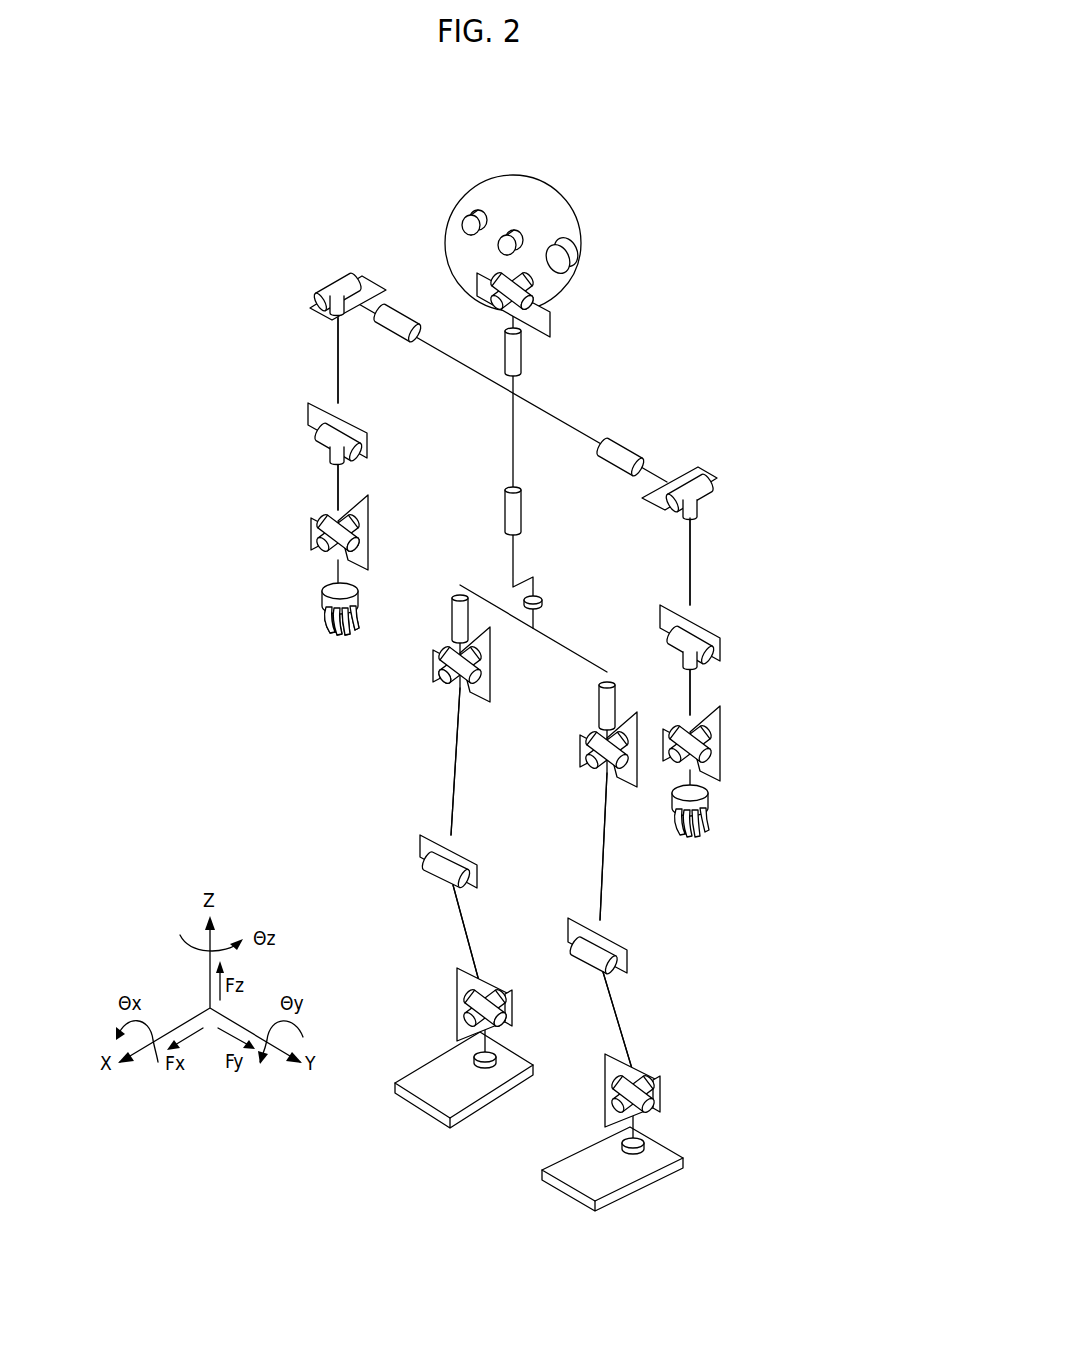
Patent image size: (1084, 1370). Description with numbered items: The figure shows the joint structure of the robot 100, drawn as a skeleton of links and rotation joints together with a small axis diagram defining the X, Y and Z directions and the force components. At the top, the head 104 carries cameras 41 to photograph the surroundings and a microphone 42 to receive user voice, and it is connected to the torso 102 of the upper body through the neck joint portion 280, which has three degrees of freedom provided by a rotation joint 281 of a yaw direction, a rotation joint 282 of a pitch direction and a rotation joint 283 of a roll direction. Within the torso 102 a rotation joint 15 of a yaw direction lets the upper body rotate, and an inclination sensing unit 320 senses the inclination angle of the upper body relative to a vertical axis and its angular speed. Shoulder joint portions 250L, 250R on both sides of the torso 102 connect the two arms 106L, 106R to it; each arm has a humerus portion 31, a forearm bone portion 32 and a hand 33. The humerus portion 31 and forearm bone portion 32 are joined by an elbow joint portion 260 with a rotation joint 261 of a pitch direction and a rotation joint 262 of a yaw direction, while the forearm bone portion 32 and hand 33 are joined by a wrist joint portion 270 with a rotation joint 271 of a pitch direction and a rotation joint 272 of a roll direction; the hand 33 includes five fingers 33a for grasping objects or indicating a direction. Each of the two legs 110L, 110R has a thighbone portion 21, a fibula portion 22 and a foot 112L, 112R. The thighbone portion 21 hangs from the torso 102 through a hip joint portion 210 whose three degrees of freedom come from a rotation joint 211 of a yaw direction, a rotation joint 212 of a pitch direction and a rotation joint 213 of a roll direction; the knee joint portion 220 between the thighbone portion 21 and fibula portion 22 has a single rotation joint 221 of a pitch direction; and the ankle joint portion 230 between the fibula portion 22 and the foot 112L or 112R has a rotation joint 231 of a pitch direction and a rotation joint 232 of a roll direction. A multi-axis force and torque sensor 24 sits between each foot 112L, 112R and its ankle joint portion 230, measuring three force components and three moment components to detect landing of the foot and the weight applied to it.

The robot 100 is at (805, 189).
The torso 102 is at (511, 466).
The head 104 is at (588, 189).
The right arm 106R is at (223, 421).
The left arm 106L is at (785, 616).
The right leg 110R is at (346, 805).
The left leg 110L is at (673, 893).
The right foot 112R is at (428, 1108).
The left foot 112L is at (566, 1192).
The cameras 41 is at (505, 245).
The microphone 42 is at (566, 262).
The rotation joint of a yaw direction 15 is at (521, 512).
The inclination sensing unit 320 is at (542, 602).
The neck joint portion 280 is at (578, 333).
The rotation joint of a yaw direction 281 is at (518, 355).
The rotation joint of a pitch direction 282 is at (532, 302).
The rotation joint of a roll direction 283 is at (494, 302).
The right shoulder joint portion 250R is at (331, 254).
The left shoulder joint portion 250L is at (665, 415).
The humerus portion 31 is at (337, 355).
The elbow joint portion 260 is at (286, 401).
The rotation joint of a pitch direction 261 is at (343, 437).
The rotation joint of a yaw direction 262 is at (345, 458).
The forearm bone portion 32 is at (337, 478).
The wrist joint portion 270 is at (288, 569).
The rotation joint of a pitch direction 271 is at (358, 546).
The rotation joint of a roll direction 272 is at (356, 526).
The hand 33 is at (305, 619).
The fingers 33a is at (340, 640).
The hip joint portion 210 is at (407, 681).
The rotation joint of a yaw direction 211 is at (453, 614).
The rotation joint of a pitch direction 212 is at (484, 671).
The rotation joint of a roll direction 213 is at (444, 684).
The thighbone portion 21 is at (456, 780).
The knee joint portion 220 is at (402, 887).
The rotation joint of a pitch direction 221 is at (455, 862).
The fibula portion 22 is at (466, 938).
The ankle joint portion 230 is at (436, 1011).
The rotation joint of a pitch direction 231 is at (506, 1018).
The rotation joint of a roll direction 232 is at (490, 998).
The multi-axis force and torque sensor 24 is at (492, 1066).